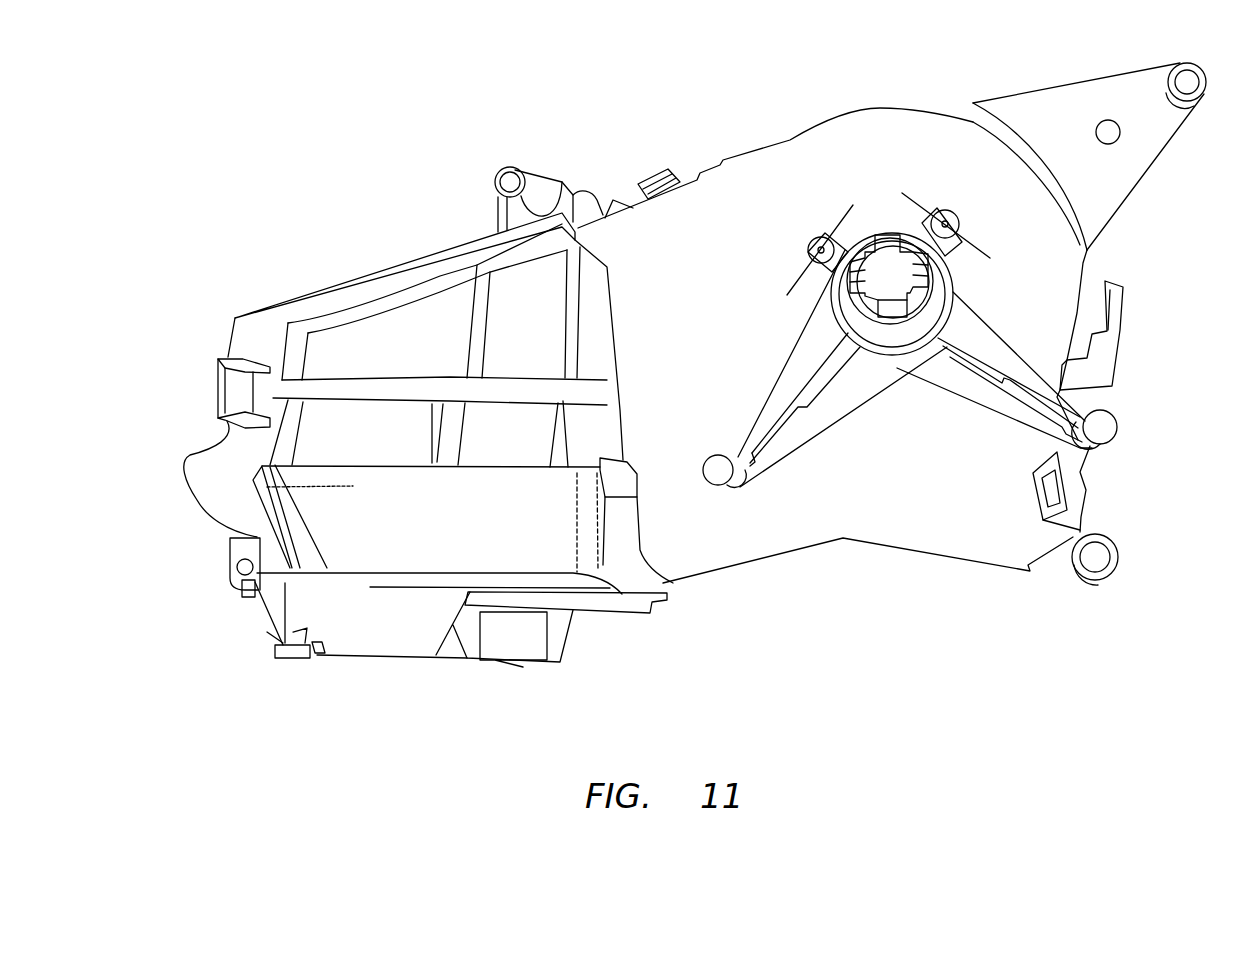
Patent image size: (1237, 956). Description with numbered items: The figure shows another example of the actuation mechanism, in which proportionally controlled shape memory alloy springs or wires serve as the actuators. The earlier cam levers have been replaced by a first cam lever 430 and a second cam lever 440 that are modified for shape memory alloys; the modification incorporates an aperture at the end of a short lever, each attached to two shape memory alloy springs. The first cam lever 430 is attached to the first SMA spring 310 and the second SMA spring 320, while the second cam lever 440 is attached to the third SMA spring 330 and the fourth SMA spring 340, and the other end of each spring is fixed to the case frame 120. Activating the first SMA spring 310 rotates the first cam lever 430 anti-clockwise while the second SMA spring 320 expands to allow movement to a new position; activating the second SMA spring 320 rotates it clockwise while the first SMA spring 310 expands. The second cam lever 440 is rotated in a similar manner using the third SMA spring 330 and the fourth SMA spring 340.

The case frame 120 is at (1047, 283).
The first SMA spring 310 is at (913, 197).
The second SMA spring 320 is at (973, 243).
The third SMA spring 330 is at (838, 222).
The fourth SMA spring 340 is at (797, 280).
The first cam lever 430 is at (792, 433).
The second cam lever 440 is at (1020, 397).